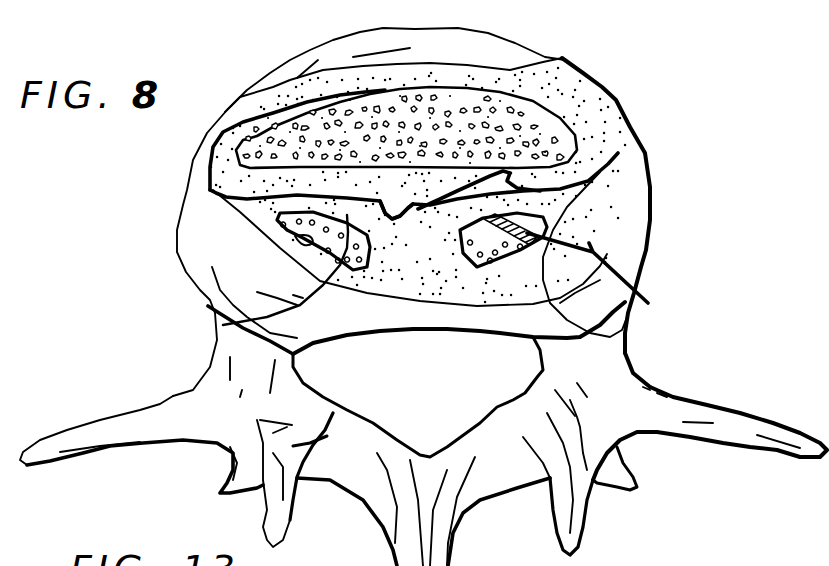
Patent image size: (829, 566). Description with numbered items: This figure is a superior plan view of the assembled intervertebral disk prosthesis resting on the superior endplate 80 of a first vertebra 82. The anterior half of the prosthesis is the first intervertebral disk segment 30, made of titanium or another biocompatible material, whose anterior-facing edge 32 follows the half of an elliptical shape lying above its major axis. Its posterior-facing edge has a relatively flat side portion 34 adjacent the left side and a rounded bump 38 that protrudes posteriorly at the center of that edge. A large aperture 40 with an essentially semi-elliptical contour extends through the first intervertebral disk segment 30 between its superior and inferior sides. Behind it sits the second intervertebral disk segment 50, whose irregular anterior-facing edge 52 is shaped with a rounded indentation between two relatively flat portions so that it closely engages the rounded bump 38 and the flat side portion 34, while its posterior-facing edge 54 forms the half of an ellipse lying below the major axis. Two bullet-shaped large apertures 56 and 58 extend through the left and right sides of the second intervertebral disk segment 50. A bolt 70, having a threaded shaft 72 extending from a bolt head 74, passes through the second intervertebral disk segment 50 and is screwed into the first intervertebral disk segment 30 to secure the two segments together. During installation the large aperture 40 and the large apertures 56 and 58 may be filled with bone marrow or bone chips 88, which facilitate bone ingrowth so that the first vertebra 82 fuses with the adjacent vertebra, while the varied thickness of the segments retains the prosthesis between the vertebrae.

The first intervertebral disk segment 30 is at (210, 173).
The anterior-facing edge 32 is at (522, 73).
The flat side portion 34 is at (255, 213).
The rounded bump 38 is at (616, 157).
The large aperture 40 is at (262, 133).
The second intervertebral disk segment 50 is at (253, 238).
The anterior-facing edge 52 is at (396, 220).
The posterior-facing edge 54 is at (223, 325).
The large aperture 56 is at (348, 220).
The large aperture 58 is at (479, 268).
The bolt 70 is at (612, 286).
The threaded shaft 72 is at (384, 155).
The bolt head 74 is at (624, 355).
The superior endplate 80 is at (490, 50).
The first vertebra 82 is at (644, 267).
The bone marrow or bone chips 88 is at (445, 116).